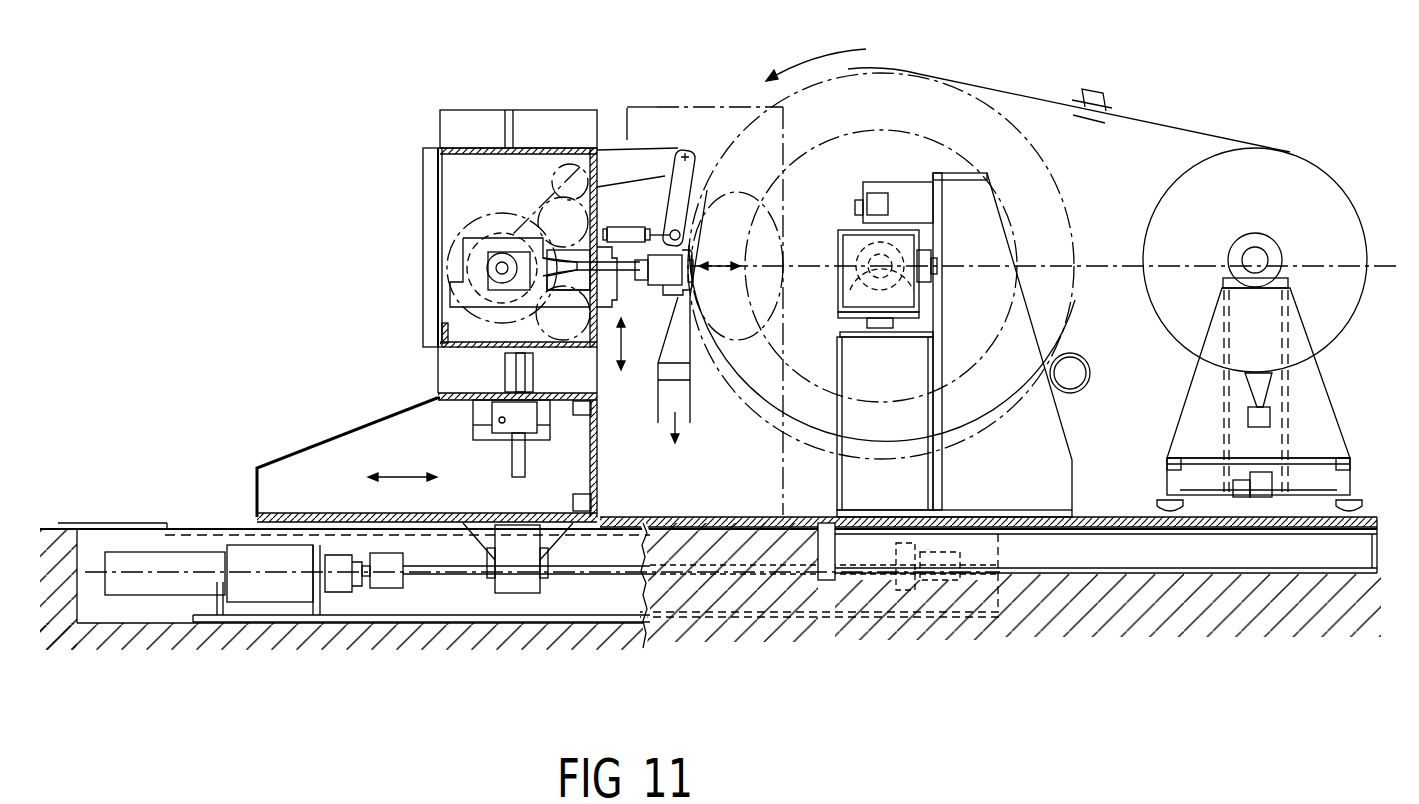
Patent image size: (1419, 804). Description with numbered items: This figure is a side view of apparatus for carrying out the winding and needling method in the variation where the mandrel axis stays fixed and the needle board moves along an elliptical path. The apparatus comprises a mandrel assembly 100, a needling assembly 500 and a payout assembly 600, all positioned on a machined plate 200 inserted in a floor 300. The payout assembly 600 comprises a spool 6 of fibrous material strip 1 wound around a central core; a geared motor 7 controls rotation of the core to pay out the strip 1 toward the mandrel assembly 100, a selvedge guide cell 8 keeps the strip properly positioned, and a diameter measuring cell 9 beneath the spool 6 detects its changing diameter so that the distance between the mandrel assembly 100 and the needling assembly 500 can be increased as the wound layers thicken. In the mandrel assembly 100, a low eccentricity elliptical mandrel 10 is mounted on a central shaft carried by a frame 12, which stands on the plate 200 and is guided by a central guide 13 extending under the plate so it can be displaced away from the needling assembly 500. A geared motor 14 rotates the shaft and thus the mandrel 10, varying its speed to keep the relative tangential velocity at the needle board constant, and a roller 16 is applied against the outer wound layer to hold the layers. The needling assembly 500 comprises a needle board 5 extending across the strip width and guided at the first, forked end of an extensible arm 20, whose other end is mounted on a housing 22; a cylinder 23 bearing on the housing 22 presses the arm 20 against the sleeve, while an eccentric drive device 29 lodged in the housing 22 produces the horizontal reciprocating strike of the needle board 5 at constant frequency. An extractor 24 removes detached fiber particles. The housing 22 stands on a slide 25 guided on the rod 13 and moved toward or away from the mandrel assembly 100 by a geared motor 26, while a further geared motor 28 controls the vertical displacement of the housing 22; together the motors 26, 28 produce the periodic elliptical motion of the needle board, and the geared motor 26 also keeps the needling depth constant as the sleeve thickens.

The fibrous material strip 1 is at (1176, 126).
The needle board 5 is at (640, 292).
The spool 6 is at (1317, 230).
The geared motor 7 is at (1238, 240).
The selvedge guide cell 8 is at (1092, 90).
The diameter measuring cell 9 is at (1270, 417).
The elliptical mandrel 10 is at (808, 190).
The frame 12 is at (1008, 475).
The central guide 13 is at (569, 579).
The geared motor 14 is at (843, 300).
The roller 16 is at (1086, 392).
The extensible arm 20 is at (651, 154).
The housing 22 is at (551, 148).
The cylinder 23 is at (670, 230).
The extractor 24 is at (661, 382).
The slide 25 is at (385, 417).
The geared motor 26 is at (260, 576).
The geared motor 28 is at (480, 410).
The eccentric drive device 29 is at (473, 222).
The mandrel assembly 100 is at (727, 660).
The machined plate 200 is at (182, 527).
The floor 300 is at (133, 683).
The needling assembly 500 is at (243, 667).
The payout assembly 600 is at (1380, 657).